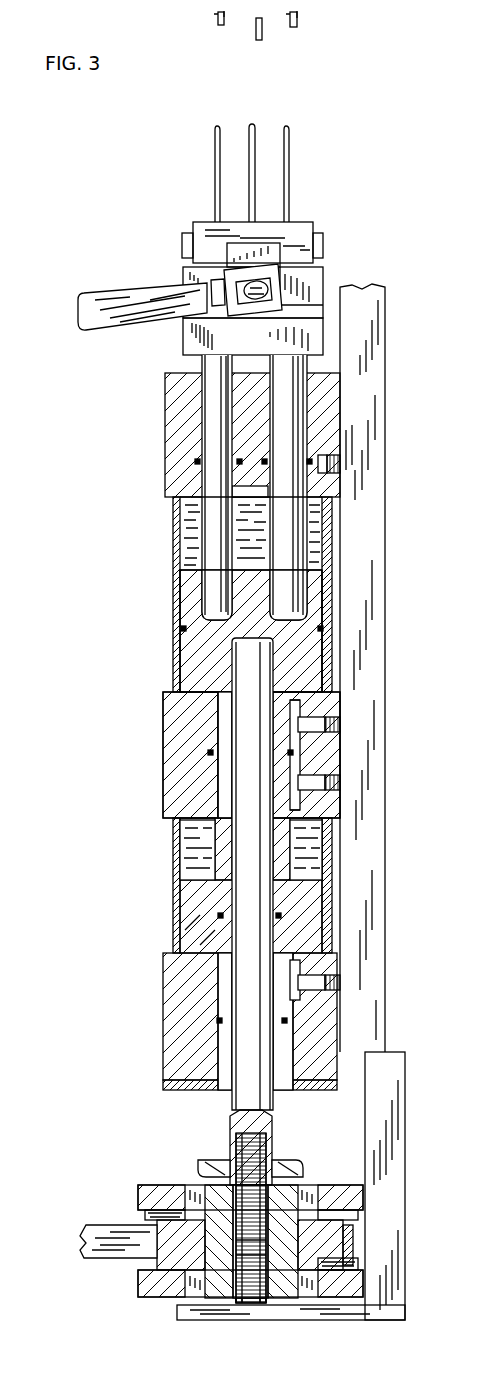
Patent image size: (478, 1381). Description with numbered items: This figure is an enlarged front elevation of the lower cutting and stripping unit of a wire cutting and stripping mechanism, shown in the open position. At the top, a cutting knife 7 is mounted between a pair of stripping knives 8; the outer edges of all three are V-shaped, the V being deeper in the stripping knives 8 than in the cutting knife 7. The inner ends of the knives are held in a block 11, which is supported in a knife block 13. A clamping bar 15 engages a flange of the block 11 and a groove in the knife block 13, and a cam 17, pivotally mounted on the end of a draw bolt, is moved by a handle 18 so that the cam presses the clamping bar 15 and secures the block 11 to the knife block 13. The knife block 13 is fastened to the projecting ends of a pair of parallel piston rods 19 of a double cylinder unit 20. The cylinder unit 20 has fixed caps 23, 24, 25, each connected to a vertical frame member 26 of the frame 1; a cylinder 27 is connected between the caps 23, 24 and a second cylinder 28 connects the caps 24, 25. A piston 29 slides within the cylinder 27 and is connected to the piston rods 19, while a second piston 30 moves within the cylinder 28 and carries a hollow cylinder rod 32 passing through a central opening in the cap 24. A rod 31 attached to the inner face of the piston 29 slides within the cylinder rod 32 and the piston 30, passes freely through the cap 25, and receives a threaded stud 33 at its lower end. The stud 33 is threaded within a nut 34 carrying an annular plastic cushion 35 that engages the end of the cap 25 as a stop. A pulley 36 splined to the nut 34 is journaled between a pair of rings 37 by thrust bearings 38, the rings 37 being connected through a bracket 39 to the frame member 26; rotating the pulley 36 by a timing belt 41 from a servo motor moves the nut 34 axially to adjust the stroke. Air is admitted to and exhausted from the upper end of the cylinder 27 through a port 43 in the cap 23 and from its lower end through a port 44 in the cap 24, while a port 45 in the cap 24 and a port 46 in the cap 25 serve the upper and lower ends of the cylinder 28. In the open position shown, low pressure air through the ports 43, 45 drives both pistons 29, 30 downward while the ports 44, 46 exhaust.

The frame 1 is at (390, 339).
The cutting knife 7 is at (257, 38).
The stripping knives 8 is at (218, 22).
The block 11 is at (305, 227).
The knife block 13 is at (186, 334).
The clamping bar 15 is at (236, 248).
The cam 17 is at (280, 297).
The handle 18 is at (106, 300).
The piston rods 19 is at (217, 393).
The double cylinder unit 20 is at (163, 748).
The cap 23 is at (170, 422).
The cap 24 is at (178, 718).
The cap 25 is at (170, 1005).
The vertical frame member 26 is at (378, 440).
The cylinder 27 is at (175, 543).
The cylinder 28 is at (178, 917).
The piston 29 is at (200, 655).
The piston 30 is at (193, 932).
The rod 31 is at (260, 663).
The cylinder rod 32 is at (218, 835).
The stud 33 is at (262, 1140).
The nut 34 is at (290, 1200).
The cushion 35 is at (213, 1170).
The pulley 36 is at (152, 1280).
The rings 37 is at (158, 1192).
The thrust bearings 38 is at (150, 1218).
The bracket 39 is at (397, 1165).
The timing belt 41 is at (85, 1237).
The port 43 is at (335, 468).
The port 44 is at (330, 728).
The port 45 is at (330, 783).
The port 46 is at (337, 986).